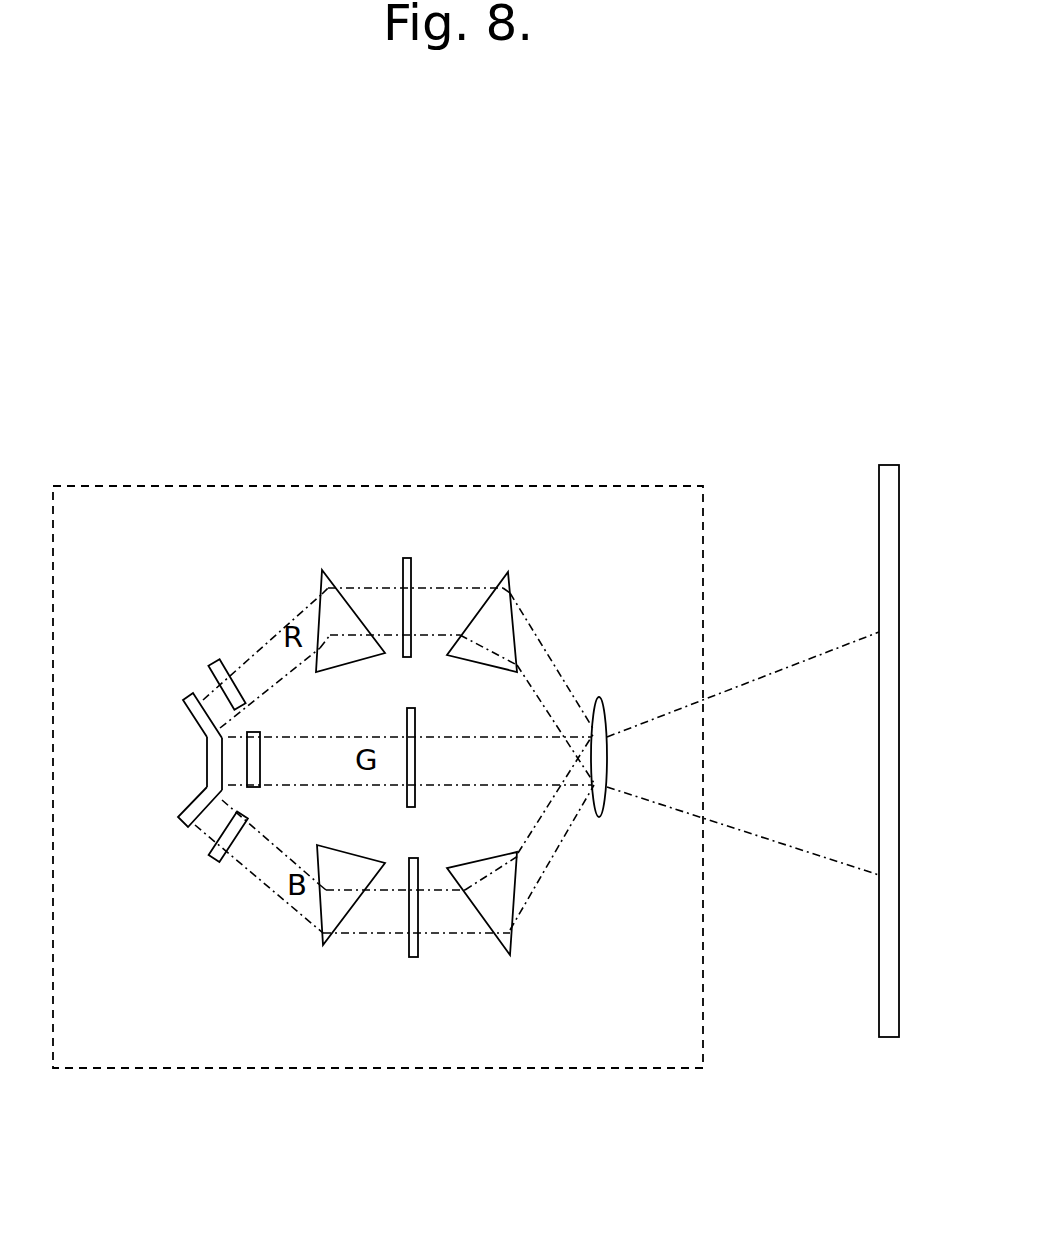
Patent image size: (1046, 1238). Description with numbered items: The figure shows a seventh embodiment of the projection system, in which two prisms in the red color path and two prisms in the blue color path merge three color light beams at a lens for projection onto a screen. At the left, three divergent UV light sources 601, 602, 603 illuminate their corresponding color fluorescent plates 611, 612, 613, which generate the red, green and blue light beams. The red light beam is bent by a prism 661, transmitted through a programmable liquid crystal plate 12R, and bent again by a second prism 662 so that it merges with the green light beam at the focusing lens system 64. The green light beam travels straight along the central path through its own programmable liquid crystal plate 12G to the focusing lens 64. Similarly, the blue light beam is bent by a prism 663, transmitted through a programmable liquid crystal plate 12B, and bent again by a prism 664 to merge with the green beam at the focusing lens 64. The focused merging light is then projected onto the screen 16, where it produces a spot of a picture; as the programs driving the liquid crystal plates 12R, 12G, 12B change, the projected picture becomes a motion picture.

The screen 16 is at (878, 540).
The focusing lens system 64 is at (603, 810).
The programmable liquid crystal plate 12R is at (403, 558).
The programmable liquid crystal plate 12G is at (415, 718).
The programmable liquid crystal plate 12B is at (417, 957).
The divergent UV light source 601 is at (188, 693).
The divergent UV light source 602 is at (203, 762).
The divergent UV light source 603 is at (180, 825).
The color fluorescent plate 611 is at (217, 660).
The color fluorescent plate 612 is at (262, 735).
The color fluorescent plate 613 is at (218, 865).
The prism 661 is at (322, 570).
The prism 662 is at (508, 570).
The prism 663 is at (323, 943).
The prism 664 is at (507, 945).